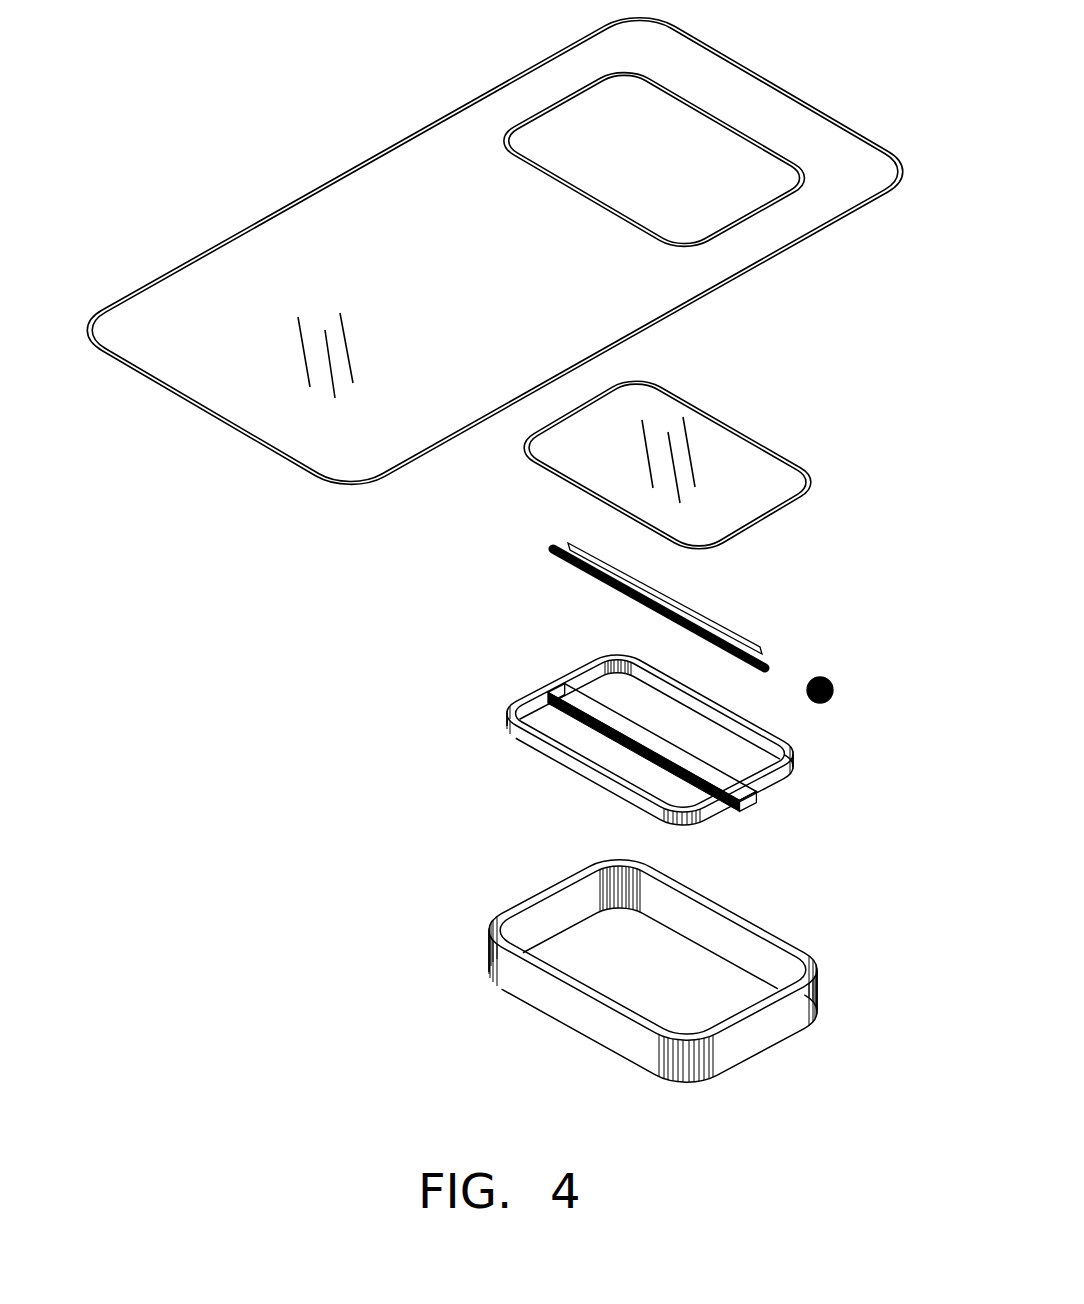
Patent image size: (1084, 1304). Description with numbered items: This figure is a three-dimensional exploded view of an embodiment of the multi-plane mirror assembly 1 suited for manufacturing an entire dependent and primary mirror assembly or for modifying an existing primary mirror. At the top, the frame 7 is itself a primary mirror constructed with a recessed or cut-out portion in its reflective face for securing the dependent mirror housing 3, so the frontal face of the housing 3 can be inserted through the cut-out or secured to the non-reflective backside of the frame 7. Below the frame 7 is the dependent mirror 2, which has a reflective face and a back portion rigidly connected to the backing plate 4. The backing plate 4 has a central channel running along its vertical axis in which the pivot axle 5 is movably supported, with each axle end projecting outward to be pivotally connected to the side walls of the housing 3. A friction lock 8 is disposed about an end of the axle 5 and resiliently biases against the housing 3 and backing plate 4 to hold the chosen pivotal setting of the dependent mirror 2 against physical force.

The multi-plane mirror assembly 1 is at (440, 93).
The housing frame 7 is at (768, 262).
The dependent mirror 2 is at (700, 402).
The pivot axle 5 is at (598, 582).
The friction lock 8 is at (838, 678).
The backing plate 4 is at (795, 766).
The dependent mirror housing 3 is at (728, 905).